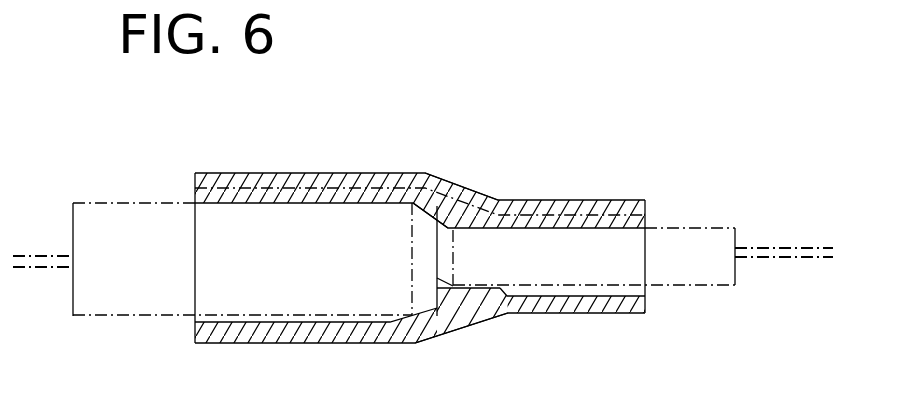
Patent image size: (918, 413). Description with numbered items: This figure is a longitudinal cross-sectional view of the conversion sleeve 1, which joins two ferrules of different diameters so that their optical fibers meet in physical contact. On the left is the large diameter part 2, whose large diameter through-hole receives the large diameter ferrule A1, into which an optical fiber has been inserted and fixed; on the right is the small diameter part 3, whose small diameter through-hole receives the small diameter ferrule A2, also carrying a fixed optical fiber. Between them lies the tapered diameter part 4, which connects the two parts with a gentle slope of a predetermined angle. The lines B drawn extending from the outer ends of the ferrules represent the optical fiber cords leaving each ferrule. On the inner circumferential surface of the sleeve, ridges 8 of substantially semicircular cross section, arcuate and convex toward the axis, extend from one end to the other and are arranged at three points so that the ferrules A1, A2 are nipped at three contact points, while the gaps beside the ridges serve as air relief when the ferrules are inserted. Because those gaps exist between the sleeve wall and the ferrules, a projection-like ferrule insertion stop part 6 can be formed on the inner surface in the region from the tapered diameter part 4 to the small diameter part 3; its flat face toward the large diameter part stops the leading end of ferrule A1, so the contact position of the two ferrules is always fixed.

The conversion sleeve 1 is at (491, 188).
The large diameter part 2 is at (343, 173).
The small diameter part 3 is at (585, 199).
The tapered diameter part 4 is at (460, 186).
The ferrule insertion stop part 6 is at (447, 295).
The ridges 8 is at (435, 197).
The large diameter ferrule A1 is at (87, 203).
The small diameter ferrule A2 is at (703, 227).
The optical fiber cord B is at (53, 268).